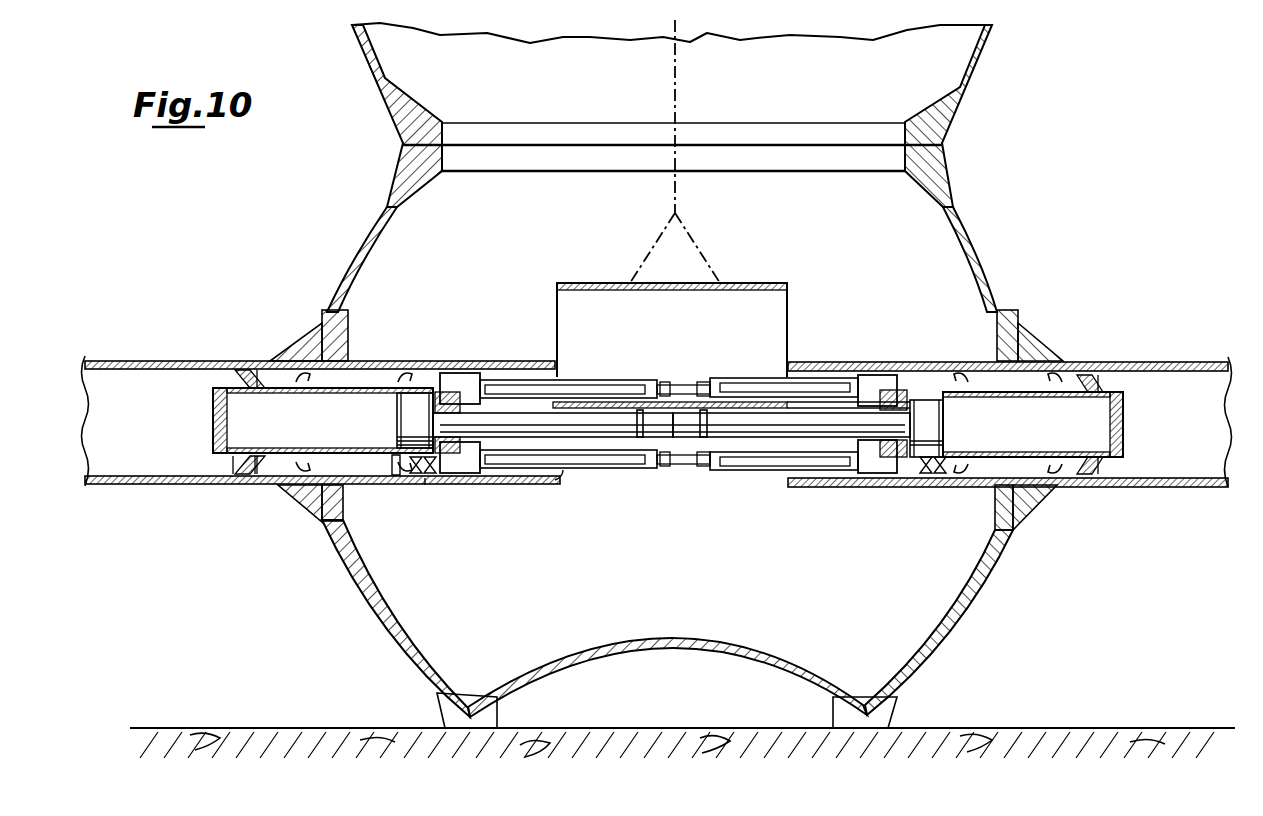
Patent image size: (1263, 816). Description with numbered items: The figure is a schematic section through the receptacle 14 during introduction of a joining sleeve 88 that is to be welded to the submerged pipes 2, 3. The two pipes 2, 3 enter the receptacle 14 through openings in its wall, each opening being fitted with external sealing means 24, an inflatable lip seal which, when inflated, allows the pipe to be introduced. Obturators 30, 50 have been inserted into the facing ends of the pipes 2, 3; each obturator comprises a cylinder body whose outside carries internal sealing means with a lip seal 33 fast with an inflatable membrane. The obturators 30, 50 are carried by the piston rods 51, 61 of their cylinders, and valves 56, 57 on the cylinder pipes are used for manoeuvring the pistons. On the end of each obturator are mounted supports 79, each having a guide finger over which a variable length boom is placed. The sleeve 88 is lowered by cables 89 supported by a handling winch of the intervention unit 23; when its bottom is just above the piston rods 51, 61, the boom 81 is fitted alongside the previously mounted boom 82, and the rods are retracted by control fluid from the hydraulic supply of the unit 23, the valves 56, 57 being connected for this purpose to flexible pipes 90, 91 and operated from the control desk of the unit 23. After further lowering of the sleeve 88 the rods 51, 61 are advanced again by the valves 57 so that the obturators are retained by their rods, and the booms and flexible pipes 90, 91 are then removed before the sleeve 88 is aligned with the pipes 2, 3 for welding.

The pipe 2 is at (167, 360).
The pipe 3 is at (1118, 362).
The receptacle 14 is at (972, 230).
The intervention unit 23 is at (962, 86).
The sealing means 24 is at (293, 343).
The obturator 30 is at (208, 421).
The lip seal 33 is at (233, 467).
The obturator 50 is at (1136, 419).
The piston rod 51 is at (610, 425).
The valve 56 is at (432, 478).
The valve 57 is at (418, 478).
The piston rod 61 is at (773, 427).
The support 79 is at (460, 380).
The boom 81 is at (618, 378).
The boom 82 is at (725, 473).
The joining sleeve 88 is at (743, 283).
The cables 89 is at (677, 193).
The flexible pipe 90 is at (560, 482).
The flexible pipe 91 is at (425, 480).